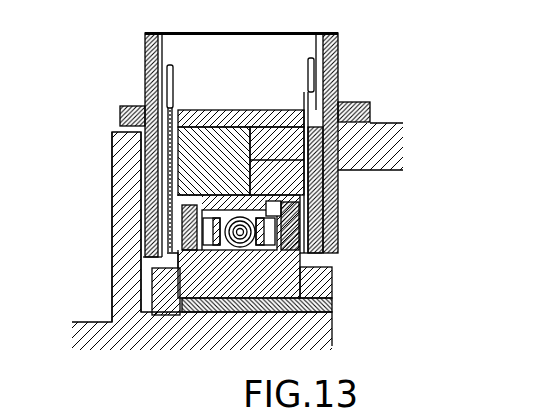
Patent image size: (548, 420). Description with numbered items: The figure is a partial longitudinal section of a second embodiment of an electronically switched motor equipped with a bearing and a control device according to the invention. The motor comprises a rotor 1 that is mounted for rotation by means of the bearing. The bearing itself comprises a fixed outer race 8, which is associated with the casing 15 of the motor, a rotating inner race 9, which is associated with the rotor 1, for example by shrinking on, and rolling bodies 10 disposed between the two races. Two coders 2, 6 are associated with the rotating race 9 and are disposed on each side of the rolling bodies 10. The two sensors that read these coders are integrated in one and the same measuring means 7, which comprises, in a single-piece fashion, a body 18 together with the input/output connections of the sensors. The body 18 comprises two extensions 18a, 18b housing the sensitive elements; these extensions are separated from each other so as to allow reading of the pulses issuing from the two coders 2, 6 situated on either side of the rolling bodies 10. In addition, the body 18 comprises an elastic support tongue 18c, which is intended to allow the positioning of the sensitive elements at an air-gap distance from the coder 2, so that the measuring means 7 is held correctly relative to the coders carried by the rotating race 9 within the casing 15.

The rotor 1 is at (307, 335).
The coder 2 is at (284, 226).
The coder 6 is at (188, 238).
The measuring means 7 is at (339, 45).
The fixed outer race 8 is at (288, 175).
The rotating inner race 9 is at (284, 281).
The rolling bodies 10 is at (240, 238).
The casing 15 is at (386, 140).
The body 18 is at (128, 106).
The extension 18a is at (160, 218).
The extension 18b is at (312, 198).
The elastic support tongue 18c is at (140, 186).